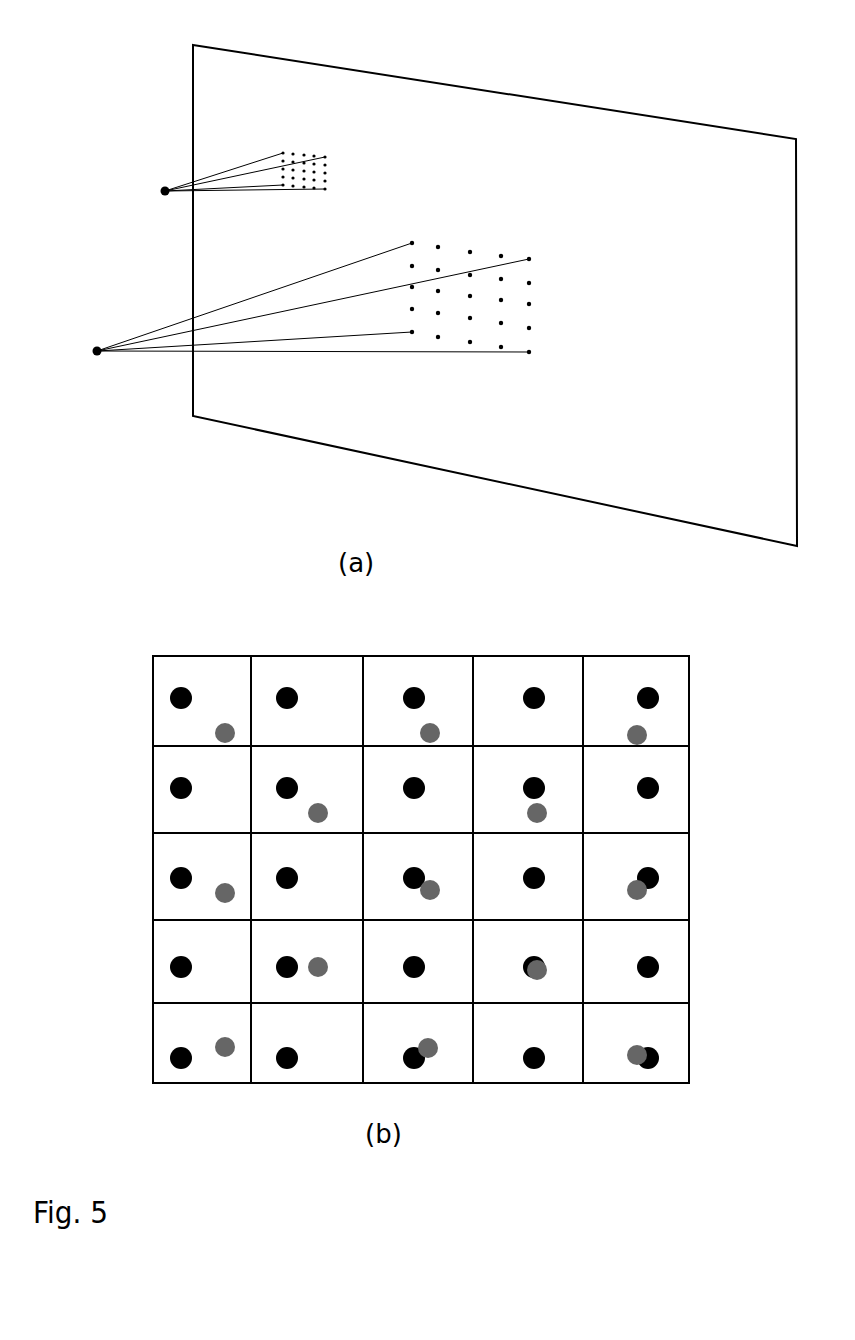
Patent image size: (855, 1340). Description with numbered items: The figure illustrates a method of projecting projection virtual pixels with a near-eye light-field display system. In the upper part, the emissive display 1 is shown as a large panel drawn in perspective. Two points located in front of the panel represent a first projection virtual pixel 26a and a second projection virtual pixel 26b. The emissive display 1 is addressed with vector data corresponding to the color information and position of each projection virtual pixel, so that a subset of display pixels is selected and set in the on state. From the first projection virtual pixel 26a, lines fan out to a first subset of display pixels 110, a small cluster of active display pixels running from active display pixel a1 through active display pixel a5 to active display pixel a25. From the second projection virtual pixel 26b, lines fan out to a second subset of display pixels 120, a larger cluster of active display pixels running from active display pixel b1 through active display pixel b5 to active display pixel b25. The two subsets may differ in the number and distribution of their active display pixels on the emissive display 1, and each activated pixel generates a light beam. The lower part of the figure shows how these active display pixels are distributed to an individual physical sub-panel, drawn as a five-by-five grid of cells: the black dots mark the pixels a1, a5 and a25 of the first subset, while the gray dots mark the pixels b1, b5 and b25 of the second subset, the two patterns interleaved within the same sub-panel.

The emissive display 1 is at (662, 200).
The first projection virtual pixel 26a is at (206, 176).
The second projection virtual pixel 26b is at (278, 305).
The first subset of display pixels 110 is at (352, 168).
The second subset of display pixels 120 is at (552, 298).
The active display pixel a1 is at (221, 413).
The active display pixel a5 is at (491, 414).
The active display pixel a25 is at (495, 628).
The active display pixel b1 is at (320, 475).
The active display pixel b5 is at (587, 486).
The active display pixel b25 is at (582, 712).